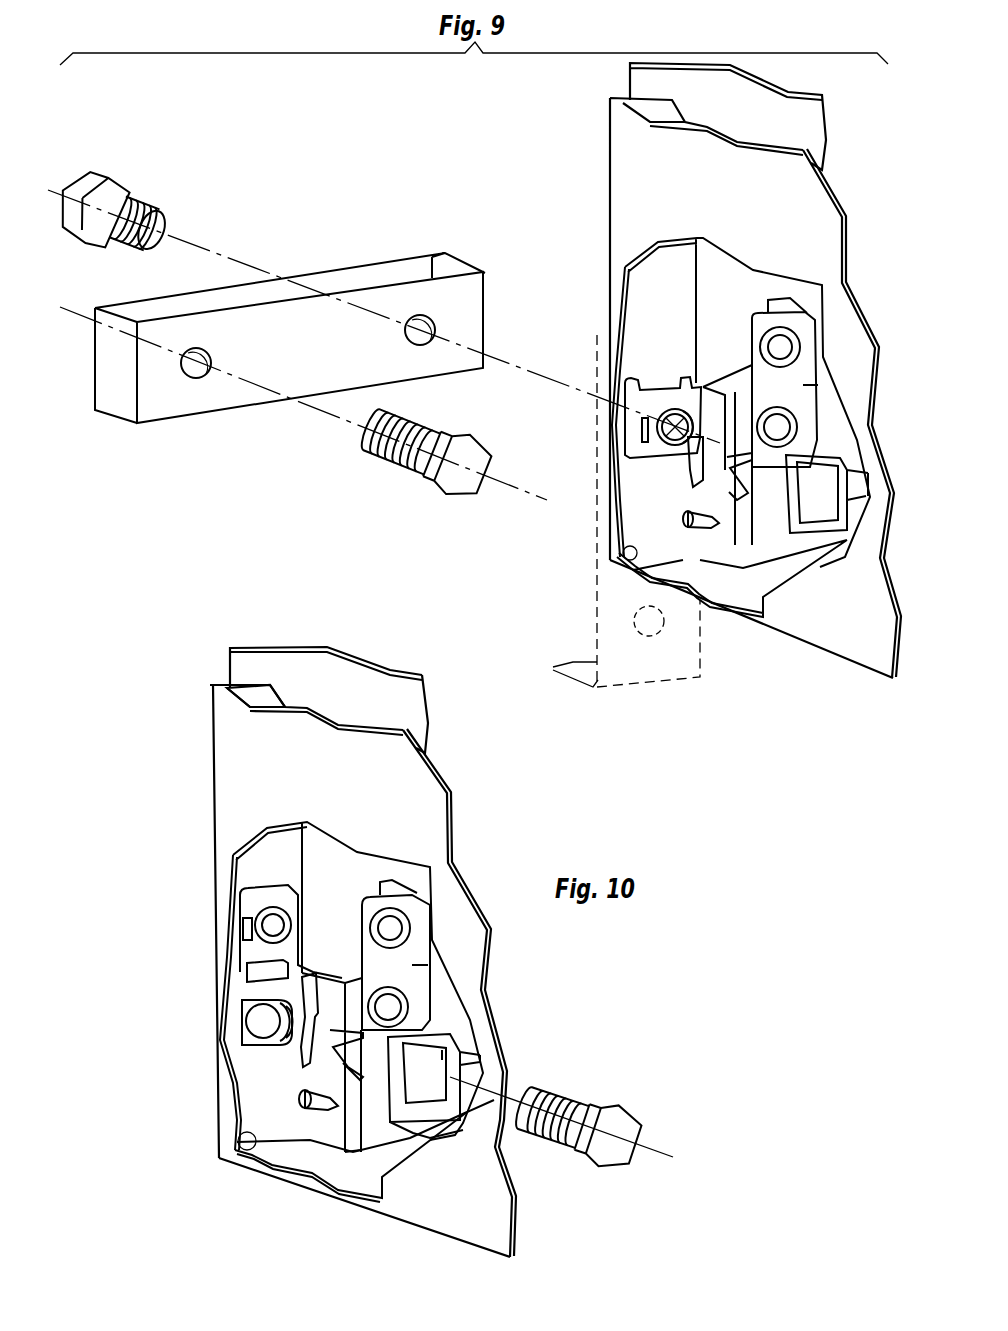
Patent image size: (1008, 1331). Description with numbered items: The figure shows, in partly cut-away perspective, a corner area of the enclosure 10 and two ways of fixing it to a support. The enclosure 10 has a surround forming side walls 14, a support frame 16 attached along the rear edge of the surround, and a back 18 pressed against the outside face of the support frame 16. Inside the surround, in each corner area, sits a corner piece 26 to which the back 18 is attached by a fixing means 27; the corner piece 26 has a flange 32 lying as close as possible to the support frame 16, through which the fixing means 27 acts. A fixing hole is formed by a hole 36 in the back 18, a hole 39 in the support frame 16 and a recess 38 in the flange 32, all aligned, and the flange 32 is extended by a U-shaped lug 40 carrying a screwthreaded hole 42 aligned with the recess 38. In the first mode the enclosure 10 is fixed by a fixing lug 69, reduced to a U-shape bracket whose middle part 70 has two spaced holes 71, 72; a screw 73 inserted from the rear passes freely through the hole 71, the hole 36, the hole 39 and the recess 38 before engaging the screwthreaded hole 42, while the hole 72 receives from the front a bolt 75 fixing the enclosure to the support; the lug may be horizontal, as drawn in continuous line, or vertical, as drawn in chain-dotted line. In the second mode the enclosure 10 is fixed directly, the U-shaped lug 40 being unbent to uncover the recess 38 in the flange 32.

In FIG. 9, the enclosure 10 is at (835, 665).
In FIG. 10, the enclosure 10 is at (400, 1248).
In FIG. 10, the side wall 14 is at (362, 763).
In FIG. 10, the support frame 16 is at (285, 686).
In FIG. 10, the back 18 is at (434, 687).
In FIG. 9, the corner piece 26 is at (680, 567).
In FIG. 10, the corner piece 26 is at (281, 1139).
In FIG. 9, the fixing means 27 is at (683, 528).
In FIG. 10, the fixing means 27 is at (304, 1117).
In FIG. 9, the flange 32 is at (640, 513).
In FIG. 10, the flange 32 is at (255, 1095).
In FIG. 10, the hole 36 is at (258, 1000).
In FIG. 10, the recess 38 is at (250, 1040).
In FIG. 10, the hole 39 is at (243, 1006).
In FIG. 9, the U-shaped lug 40 is at (672, 423).
In FIG. 10, the U-shaped lug 40 is at (270, 884).
In FIG. 9, the screwthreaded hole 42 is at (636, 457).
In FIG. 10, the screwthreaded hole 42 is at (278, 930).
In FIG. 9, the fixing lug 69 is at (458, 243).
In FIG. 9, the middle part 70 is at (305, 325).
In FIG. 9, the hole 71 is at (405, 339).
In FIG. 9, the hole 72 is at (188, 377).
In FIG. 9, the screw 73 is at (122, 175).
In FIG. 9, the bolt 75 is at (438, 502).
In FIG. 10, the bolt 75 is at (631, 1170).